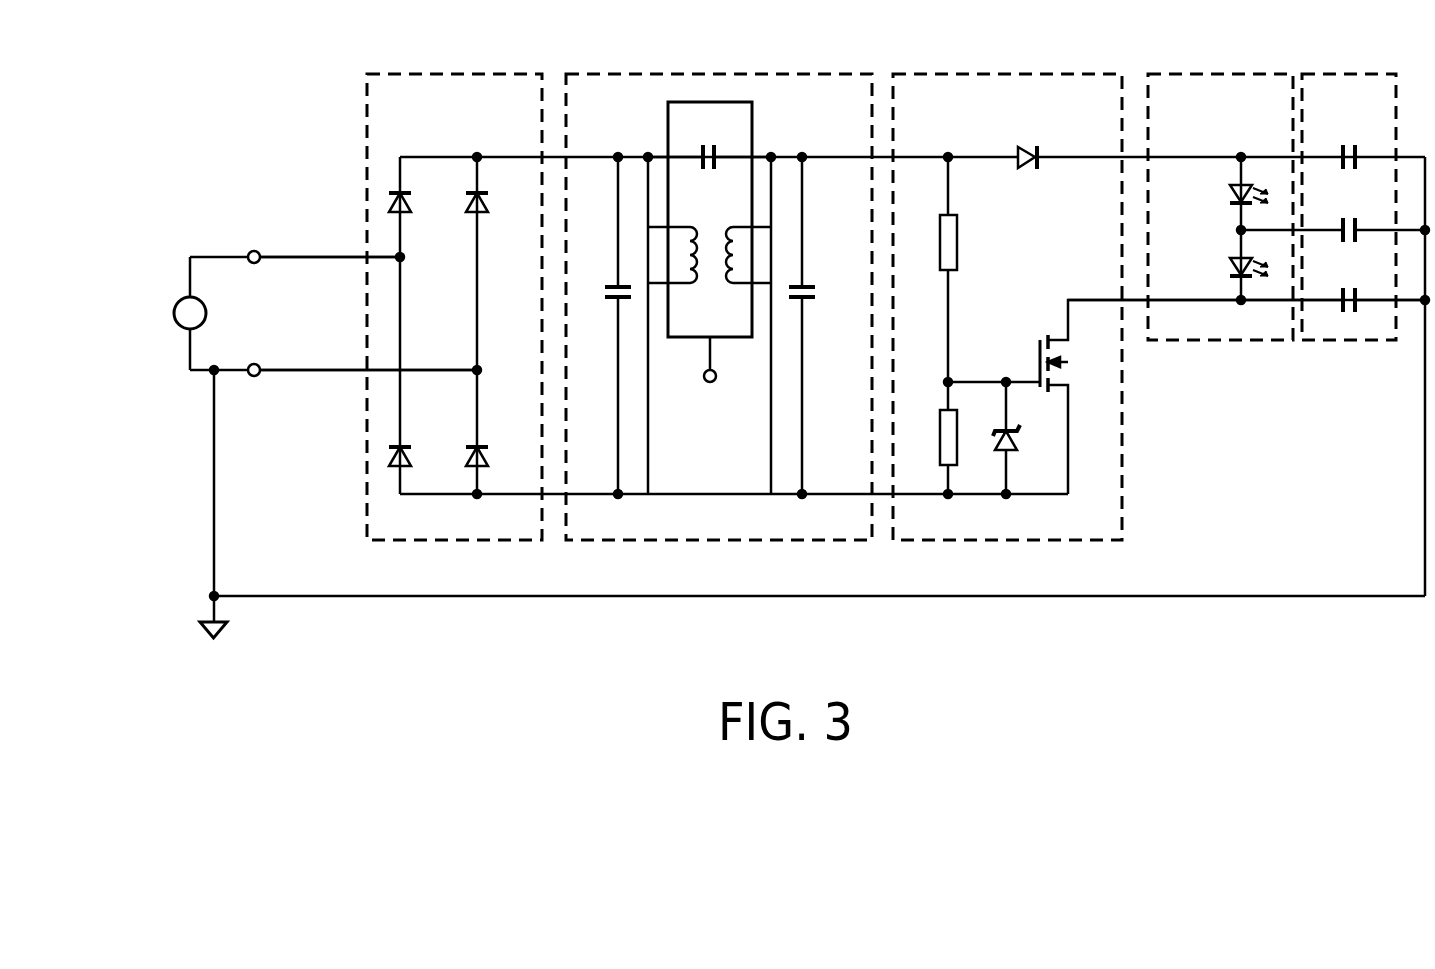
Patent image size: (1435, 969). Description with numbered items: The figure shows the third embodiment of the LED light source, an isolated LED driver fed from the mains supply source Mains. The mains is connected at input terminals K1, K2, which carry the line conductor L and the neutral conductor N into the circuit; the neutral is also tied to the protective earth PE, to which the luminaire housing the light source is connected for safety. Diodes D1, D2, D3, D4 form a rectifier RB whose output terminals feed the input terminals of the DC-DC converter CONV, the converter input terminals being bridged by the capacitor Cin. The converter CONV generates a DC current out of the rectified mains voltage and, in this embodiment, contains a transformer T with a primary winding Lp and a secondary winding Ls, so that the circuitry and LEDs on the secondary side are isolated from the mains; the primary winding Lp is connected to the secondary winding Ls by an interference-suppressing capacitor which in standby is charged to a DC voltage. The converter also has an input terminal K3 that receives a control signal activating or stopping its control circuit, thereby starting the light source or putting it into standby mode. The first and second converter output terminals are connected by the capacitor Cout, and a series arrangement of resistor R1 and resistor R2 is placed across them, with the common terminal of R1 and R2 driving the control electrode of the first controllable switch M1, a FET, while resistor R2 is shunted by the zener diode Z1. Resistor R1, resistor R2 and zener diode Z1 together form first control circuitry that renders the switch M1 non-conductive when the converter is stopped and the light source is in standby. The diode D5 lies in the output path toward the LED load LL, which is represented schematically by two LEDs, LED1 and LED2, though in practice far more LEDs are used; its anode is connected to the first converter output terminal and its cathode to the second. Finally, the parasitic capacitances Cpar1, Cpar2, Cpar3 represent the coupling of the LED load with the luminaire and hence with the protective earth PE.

The mains voltage source Mains is at (155, 313).
The input terminal K1 is at (295, 244).
The input terminal K2 is at (333, 358).
The line conductor L is at (332, 245).
The neutral conductor N is at (345, 358).
The protective earth PE is at (812, 397).
The rectifier RB is at (455, 74).
The diode D1 is at (417, 207).
The diode D2 is at (495, 263).
The diode D3 is at (417, 375).
The diode D4 is at (495, 432).
The DC-DC converter CONV is at (712, 102).
The capacitor Cin is at (603, 325).
The capacitor Cout is at (826, 325).
The transformer T is at (709, 325).
The primary winding Lp is at (689, 271).
The secondary winding Ls is at (733, 271).
The input terminal K3 is at (727, 363).
The resistor R1 is at (967, 267).
The resistor R2 is at (974, 438).
The zener diode Z1 is at (1026, 438).
The diode D5 is at (1028, 143).
The first controllable switch M1 is at (1232, 397).
The LED load LL is at (1225, 74).
The LED LED1 is at (1215, 191).
The LED LED2 is at (1215, 265).
The parasitic capacitance Cpar1 is at (1348, 141).
The parasitic capacitance Cpar2 is at (1335, 213).
The parasitic capacitance Cpar3 is at (1248, 284).